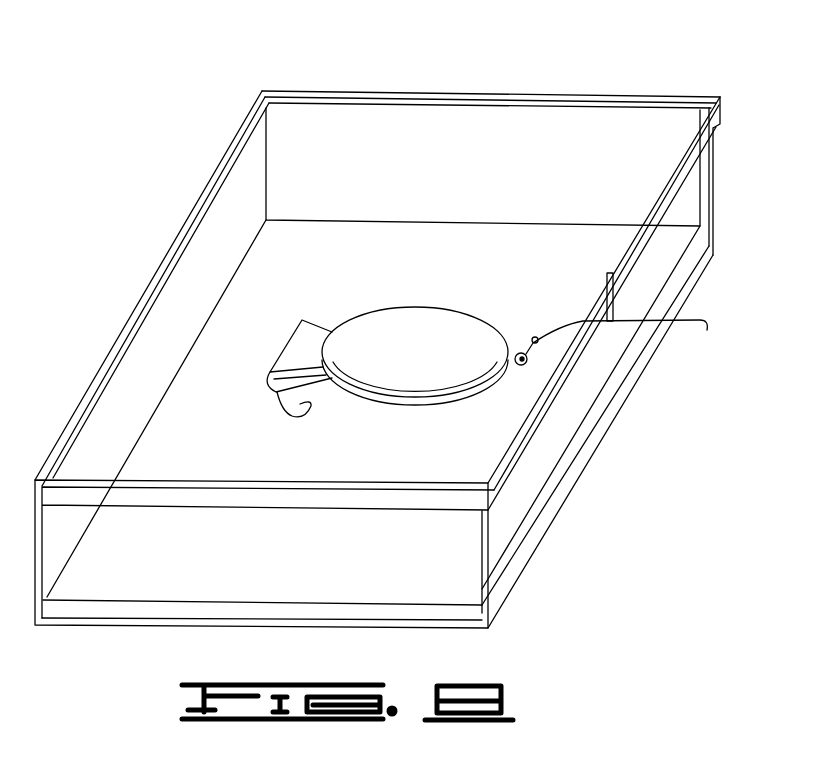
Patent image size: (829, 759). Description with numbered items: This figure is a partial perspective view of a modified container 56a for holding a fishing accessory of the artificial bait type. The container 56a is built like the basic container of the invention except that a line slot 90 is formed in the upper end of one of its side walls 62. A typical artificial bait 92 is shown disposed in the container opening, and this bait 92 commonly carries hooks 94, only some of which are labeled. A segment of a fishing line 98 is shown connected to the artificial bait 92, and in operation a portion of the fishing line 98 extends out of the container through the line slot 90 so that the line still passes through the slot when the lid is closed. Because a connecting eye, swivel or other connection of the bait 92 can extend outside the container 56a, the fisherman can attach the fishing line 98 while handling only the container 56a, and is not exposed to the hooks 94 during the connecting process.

The modified container 56a is at (343, 90).
The side wall 62 is at (634, 123).
The artificial bait 92 is at (388, 310).
The hooks 94 is at (287, 410).
The line slot 90 is at (607, 277).
The fishing line 98 is at (696, 318).